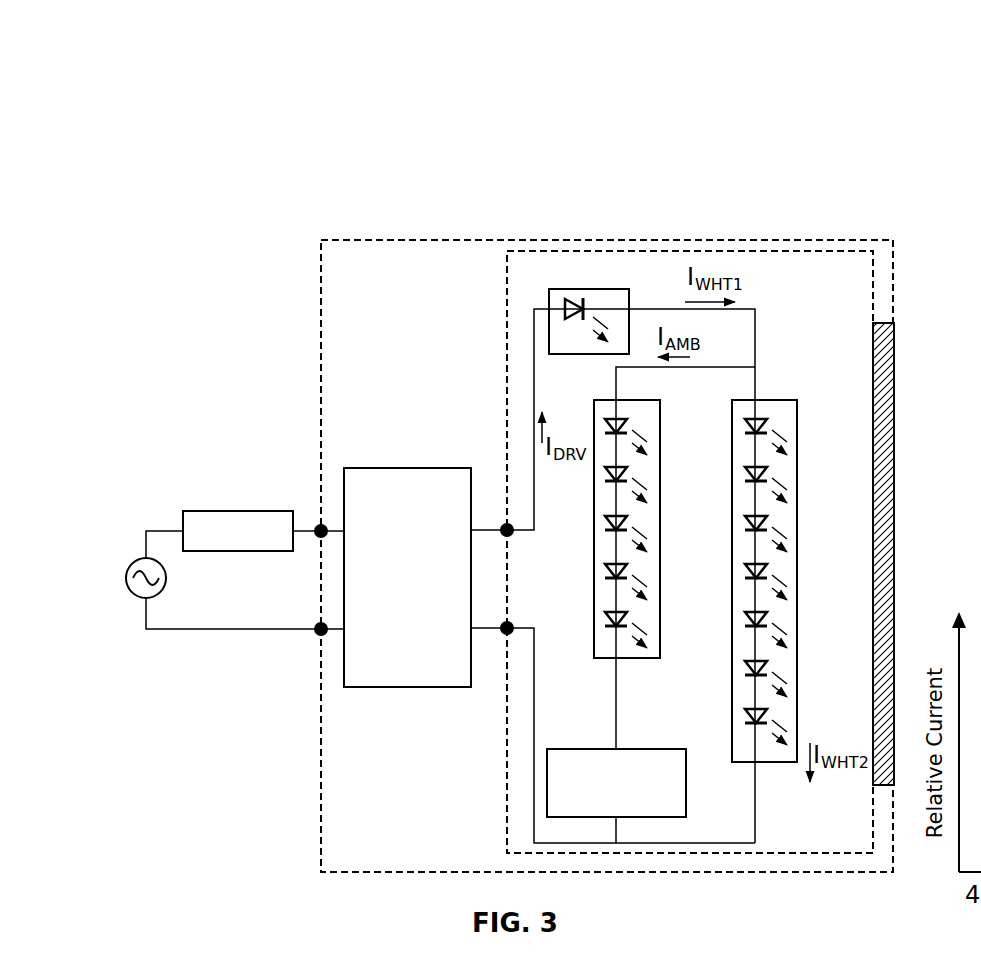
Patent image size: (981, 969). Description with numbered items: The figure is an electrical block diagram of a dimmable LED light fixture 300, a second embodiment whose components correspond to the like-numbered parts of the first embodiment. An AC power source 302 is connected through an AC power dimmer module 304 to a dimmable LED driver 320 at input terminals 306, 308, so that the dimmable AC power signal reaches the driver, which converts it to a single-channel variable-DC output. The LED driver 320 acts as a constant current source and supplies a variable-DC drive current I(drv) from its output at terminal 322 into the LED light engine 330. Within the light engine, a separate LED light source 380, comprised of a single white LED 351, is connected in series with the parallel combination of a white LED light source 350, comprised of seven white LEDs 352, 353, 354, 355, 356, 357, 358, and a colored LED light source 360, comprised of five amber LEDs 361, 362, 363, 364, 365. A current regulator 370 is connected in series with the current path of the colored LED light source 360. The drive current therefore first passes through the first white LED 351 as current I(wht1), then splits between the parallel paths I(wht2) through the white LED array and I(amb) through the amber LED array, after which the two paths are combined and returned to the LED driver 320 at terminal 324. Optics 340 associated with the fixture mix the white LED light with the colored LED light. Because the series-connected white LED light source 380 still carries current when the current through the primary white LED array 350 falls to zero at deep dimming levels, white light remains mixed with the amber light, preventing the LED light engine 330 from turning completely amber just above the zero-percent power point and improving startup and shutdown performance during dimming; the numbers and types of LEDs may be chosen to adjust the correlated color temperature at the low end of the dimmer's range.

The dimmable LED light fixture 300 is at (321, 283).
The AC power source 302 is at (160, 592).
The AC power dimmer module 304 is at (200, 511).
The input terminal 306 is at (316, 537).
The input terminal 308 is at (316, 623).
The dimmable LED driver 320 is at (410, 468).
The output terminal 322 is at (512, 536).
The return terminal 324 is at (512, 622).
The LED light engine 330 is at (507, 290).
The optics 340 is at (888, 364).
The white LED light source 350 is at (788, 400).
The white LED 351 is at (583, 325).
The white LED 352 is at (772, 424).
The white LED 353 is at (772, 472).
The white LED 354 is at (772, 521).
The white LED 355 is at (772, 569).
The white LED 356 is at (772, 617).
The white LED 357 is at (772, 666).
The white LED 358 is at (772, 714).
The colored LED light source 360 is at (647, 400).
The amber LED 361 is at (632, 424).
The amber LED 362 is at (632, 472).
The amber LED 363 is at (632, 521).
The amber LED 364 is at (632, 569).
The amber LED 365 is at (632, 617).
The current regulator 370 is at (651, 749).
The separate LED light source 380 is at (615, 289).